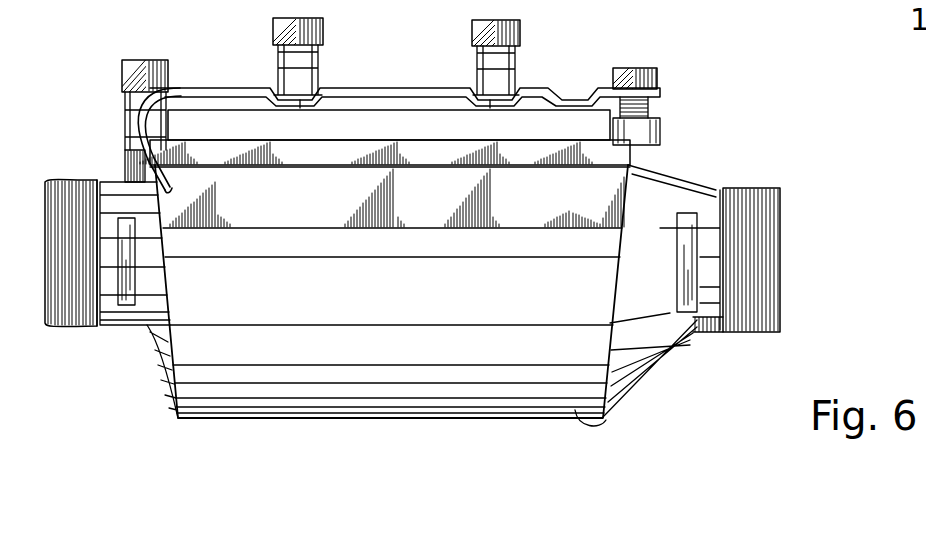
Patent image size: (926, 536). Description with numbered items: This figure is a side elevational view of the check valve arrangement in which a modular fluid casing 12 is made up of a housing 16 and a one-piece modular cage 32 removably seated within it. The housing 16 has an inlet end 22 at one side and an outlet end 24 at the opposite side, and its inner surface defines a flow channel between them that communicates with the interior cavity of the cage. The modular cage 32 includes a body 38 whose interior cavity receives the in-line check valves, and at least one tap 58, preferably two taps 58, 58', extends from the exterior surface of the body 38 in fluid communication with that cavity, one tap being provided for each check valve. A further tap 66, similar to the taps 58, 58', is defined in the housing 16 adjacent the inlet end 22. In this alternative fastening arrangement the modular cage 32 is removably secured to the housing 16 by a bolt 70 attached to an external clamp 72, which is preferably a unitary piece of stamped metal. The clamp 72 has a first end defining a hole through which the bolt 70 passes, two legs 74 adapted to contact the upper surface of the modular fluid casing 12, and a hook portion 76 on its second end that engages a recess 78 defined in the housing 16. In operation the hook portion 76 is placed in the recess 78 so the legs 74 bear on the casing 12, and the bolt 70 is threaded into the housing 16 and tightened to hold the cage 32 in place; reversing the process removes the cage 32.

The modular fluid casing 12 is at (122, 50).
The housing 16 is at (600, 420).
The inlet end 22 is at (50, 328).
The outlet end 24 is at (777, 186).
The modular cage 32 is at (183, 108).
The body 38 is at (578, 127).
The tap 58 is at (278, 55).
The tap 58' is at (474, 58).
The tap 66 is at (125, 145).
The bolt 70 is at (655, 92).
The external clamp 72 is at (402, 92).
The legs 74 is at (318, 106).
The hook portion 76 is at (126, 165).
The recess 78 is at (170, 192).